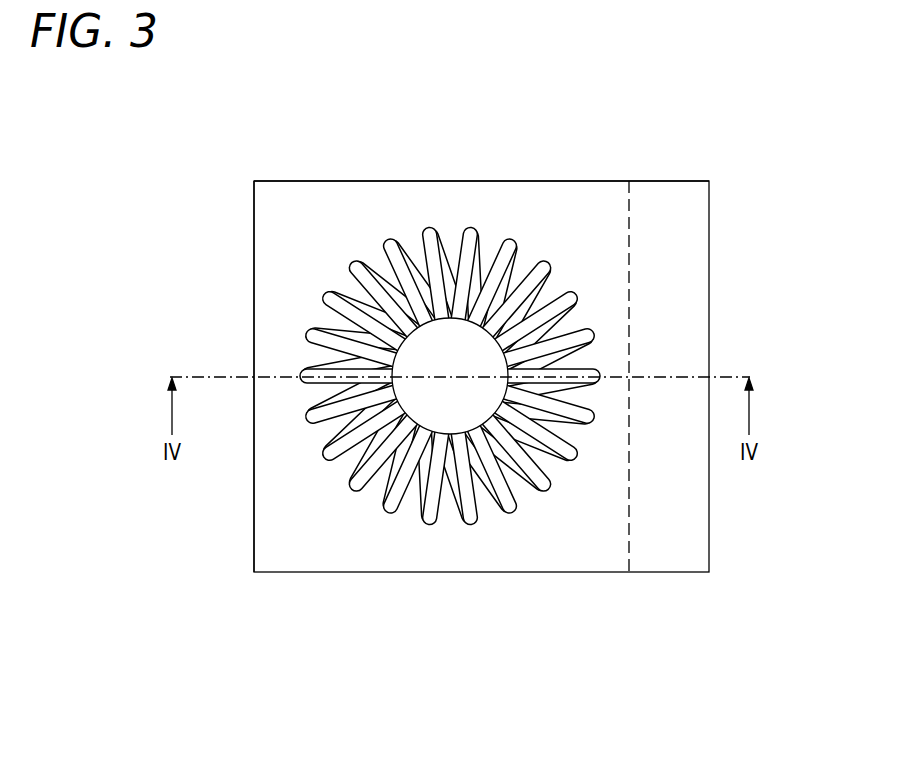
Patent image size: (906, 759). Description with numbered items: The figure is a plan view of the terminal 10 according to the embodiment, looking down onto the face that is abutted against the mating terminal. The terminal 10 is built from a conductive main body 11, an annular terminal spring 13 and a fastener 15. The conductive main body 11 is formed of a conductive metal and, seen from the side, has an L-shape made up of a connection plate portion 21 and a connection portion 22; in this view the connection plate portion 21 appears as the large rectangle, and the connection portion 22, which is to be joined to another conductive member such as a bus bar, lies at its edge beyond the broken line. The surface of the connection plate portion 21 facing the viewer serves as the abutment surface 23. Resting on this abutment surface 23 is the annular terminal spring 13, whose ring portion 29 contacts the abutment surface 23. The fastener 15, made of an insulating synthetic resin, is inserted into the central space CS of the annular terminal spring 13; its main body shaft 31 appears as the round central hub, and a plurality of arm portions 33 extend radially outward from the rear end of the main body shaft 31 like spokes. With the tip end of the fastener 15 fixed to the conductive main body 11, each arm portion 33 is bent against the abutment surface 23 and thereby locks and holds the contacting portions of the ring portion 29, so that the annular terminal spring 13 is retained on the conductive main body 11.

The terminal 10 is at (222, 176).
The conductive main body 11 is at (250, 535).
The annular terminal spring 13 is at (601, 320).
The fastener 15 is at (492, 320).
The connection plate portion 21 is at (399, 181).
The connection portion 22 is at (683, 533).
The abutment surface 23 is at (270, 290).
The ring portion 29 is at (540, 490).
The main body shaft 31 is at (473, 395).
The arm portions 33 is at (451, 265).
The central space CS is at (435, 362).